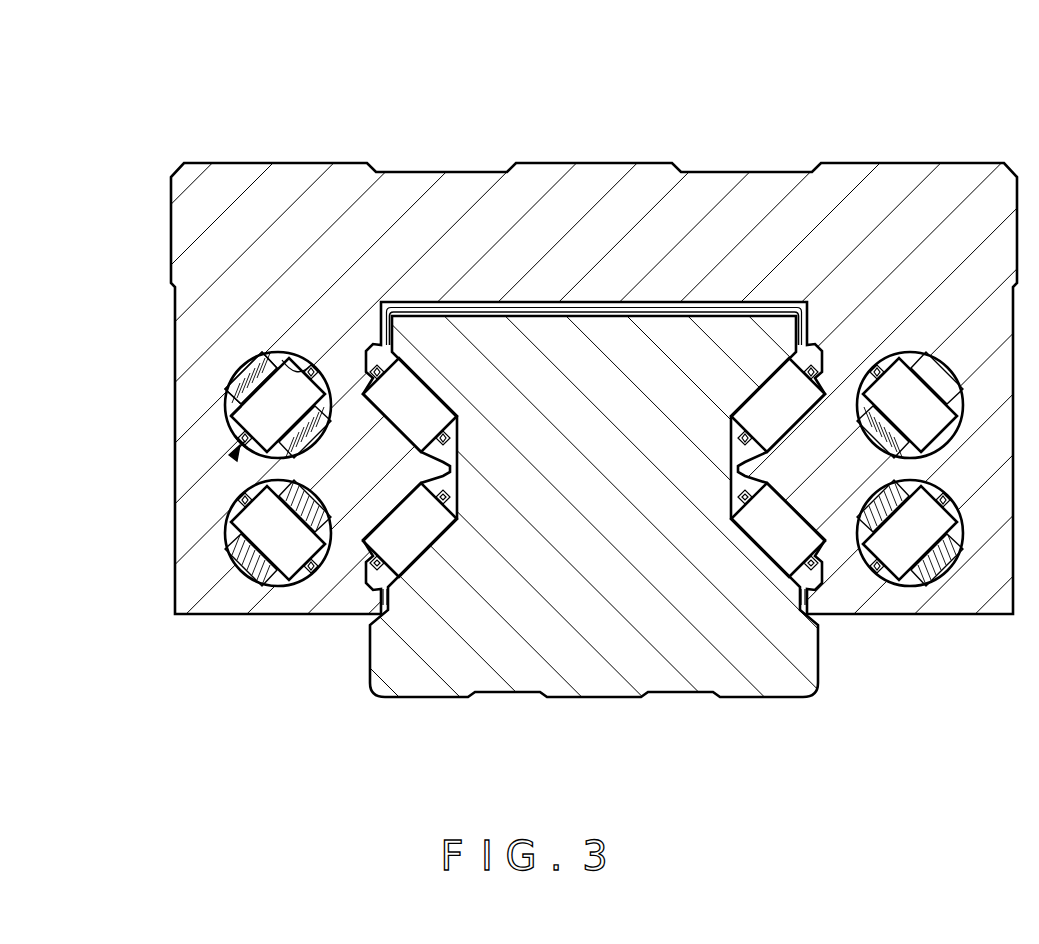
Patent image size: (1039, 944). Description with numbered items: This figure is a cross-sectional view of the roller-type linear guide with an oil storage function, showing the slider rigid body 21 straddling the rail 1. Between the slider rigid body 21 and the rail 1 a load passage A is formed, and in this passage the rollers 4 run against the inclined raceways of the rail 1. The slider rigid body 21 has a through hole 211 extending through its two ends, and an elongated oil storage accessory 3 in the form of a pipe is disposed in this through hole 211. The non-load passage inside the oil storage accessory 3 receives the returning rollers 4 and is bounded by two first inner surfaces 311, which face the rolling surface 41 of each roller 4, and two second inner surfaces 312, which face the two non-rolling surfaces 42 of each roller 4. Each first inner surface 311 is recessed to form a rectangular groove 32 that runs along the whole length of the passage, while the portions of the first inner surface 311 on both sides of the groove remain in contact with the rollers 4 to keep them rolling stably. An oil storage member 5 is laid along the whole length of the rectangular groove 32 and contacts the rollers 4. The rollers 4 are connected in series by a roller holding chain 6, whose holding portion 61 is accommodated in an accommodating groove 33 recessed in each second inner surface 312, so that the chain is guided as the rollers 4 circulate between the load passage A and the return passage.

The rail 1 is at (775, 672).
The slider rigid body 21 is at (605, 212).
The through hole 211 is at (272, 356).
The oil storage accessory 3 is at (262, 470).
The first inner surface 311 is at (243, 385).
The second inner surface 312 is at (235, 411).
The rectangular groove 32 is at (247, 378).
The accommodating groove 33 is at (236, 447).
The roller 4 is at (448, 104).
The rolling surface 41 is at (312, 372).
The non-rolling surface 42 is at (293, 362).
The oil storage member 5 is at (265, 368).
The roller holding chain 6 is at (234, 455).
The holding portion 61 is at (243, 437).
The load passage A is at (432, 398).